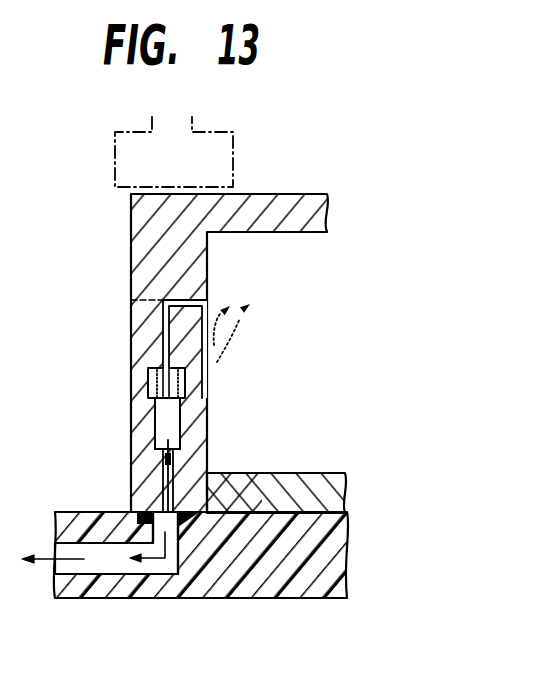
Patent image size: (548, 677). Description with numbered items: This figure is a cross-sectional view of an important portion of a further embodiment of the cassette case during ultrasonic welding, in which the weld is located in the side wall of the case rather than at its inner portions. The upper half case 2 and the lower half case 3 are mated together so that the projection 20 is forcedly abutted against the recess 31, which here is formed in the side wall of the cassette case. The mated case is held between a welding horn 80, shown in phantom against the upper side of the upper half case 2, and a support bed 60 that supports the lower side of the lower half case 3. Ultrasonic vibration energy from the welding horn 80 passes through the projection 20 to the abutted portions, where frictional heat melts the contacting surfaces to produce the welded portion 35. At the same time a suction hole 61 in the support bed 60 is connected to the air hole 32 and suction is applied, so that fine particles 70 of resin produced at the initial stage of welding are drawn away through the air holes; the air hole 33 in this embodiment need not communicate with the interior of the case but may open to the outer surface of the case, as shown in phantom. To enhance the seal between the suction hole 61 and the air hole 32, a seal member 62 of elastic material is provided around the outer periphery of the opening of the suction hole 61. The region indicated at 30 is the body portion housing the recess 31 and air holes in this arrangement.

The upper half case 2 is at (269, 194).
The lower half case 3 is at (328, 495).
The projection 20 is at (208, 263).
The sensor body 30 is at (208, 420).
The recess 31 is at (131, 432).
The air hole 32 is at (207, 458).
The air hole 33 is at (131, 321).
The welded portion 35 is at (132, 386).
The support bed 60 is at (328, 555).
The suction hole 61 is at (104, 556).
The seal member 62 is at (131, 506).
The fine particles 70 is at (228, 341).
The welding horn 80 is at (115, 165).